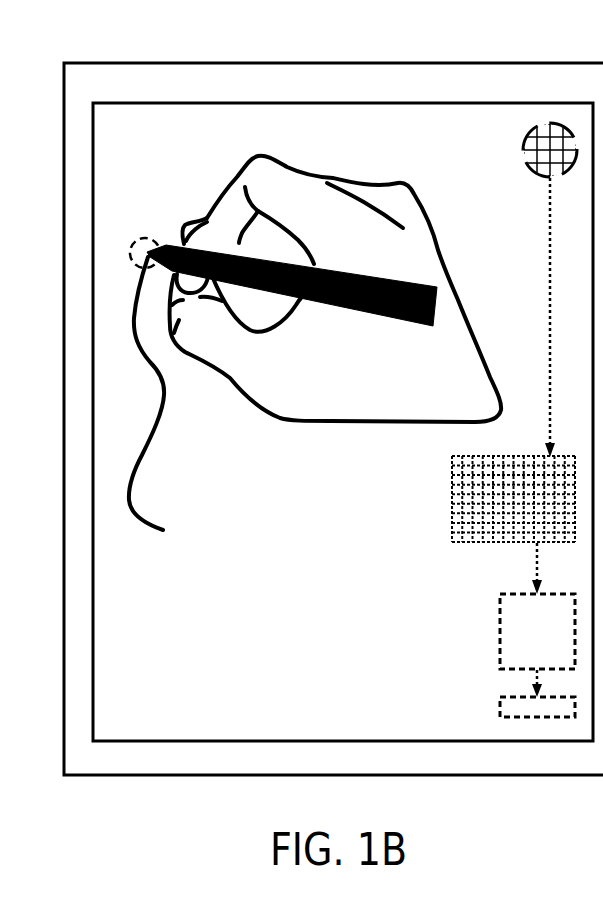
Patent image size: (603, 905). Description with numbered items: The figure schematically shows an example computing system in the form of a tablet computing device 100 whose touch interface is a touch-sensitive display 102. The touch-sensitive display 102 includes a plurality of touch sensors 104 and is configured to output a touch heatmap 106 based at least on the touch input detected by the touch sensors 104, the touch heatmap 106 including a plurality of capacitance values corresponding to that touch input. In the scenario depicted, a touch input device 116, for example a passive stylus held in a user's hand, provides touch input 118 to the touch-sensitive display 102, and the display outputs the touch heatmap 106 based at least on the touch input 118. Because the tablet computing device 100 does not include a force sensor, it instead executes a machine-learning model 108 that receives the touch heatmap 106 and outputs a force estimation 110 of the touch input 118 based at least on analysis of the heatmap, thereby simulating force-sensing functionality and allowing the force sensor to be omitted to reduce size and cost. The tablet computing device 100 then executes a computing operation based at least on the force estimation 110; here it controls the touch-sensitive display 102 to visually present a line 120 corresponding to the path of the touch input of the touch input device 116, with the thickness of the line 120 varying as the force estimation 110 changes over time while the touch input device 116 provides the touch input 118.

The tablet computing device 100 is at (142, 62).
The touch-sensitive display 102 is at (122, 102).
The touch sensors 104 is at (524, 148).
The touch heatmap 106 is at (453, 518).
The machine-learning model 108 is at (500, 643).
The force estimation 110 is at (500, 710).
The touch input device 116 is at (364, 312).
The touch input 118 is at (150, 237).
The line 120 is at (133, 466).